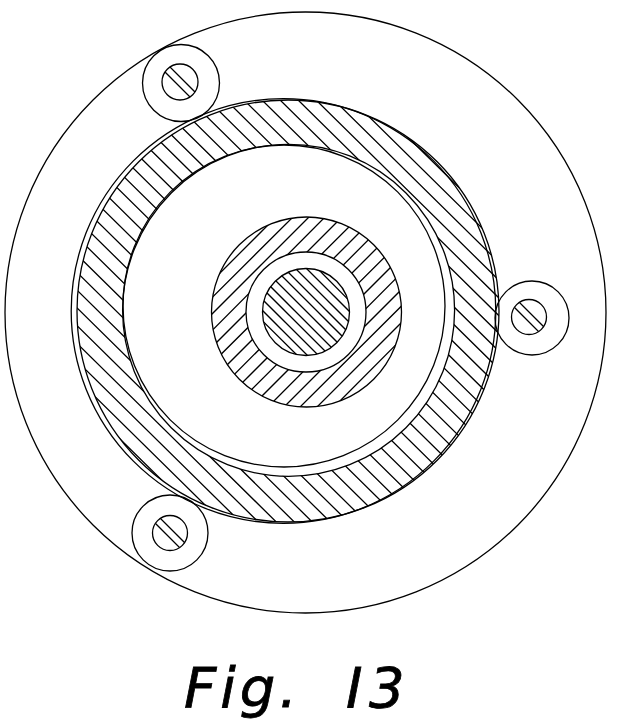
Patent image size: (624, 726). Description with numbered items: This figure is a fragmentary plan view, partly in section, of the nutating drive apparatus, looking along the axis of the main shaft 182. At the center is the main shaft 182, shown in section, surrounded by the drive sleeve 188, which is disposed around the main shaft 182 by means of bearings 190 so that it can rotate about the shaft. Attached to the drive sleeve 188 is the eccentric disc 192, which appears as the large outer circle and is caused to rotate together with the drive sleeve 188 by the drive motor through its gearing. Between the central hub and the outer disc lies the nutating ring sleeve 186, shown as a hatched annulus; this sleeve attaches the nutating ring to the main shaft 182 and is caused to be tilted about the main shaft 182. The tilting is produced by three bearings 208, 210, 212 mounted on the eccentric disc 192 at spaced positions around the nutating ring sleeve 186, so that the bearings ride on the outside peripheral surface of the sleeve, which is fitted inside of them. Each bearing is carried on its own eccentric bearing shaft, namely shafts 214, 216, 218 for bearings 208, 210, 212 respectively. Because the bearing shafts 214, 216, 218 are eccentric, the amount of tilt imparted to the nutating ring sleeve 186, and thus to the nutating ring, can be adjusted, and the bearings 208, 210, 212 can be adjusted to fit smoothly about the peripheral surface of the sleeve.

The main shaft 182 is at (280, 332).
The nutating ring sleeve 186 is at (422, 473).
The drive sleeve 188 is at (222, 268).
The bearings 190 is at (280, 262).
The eccentric disc 192 is at (522, 118).
The bearing 208 is at (217, 64).
The bearing 210 is at (530, 278).
The bearing 212 is at (207, 552).
The eccentric bearing shaft 214 is at (168, 97).
The eccentric bearing shaft 216 is at (527, 333).
The eccentric bearing shaft 218 is at (163, 517).